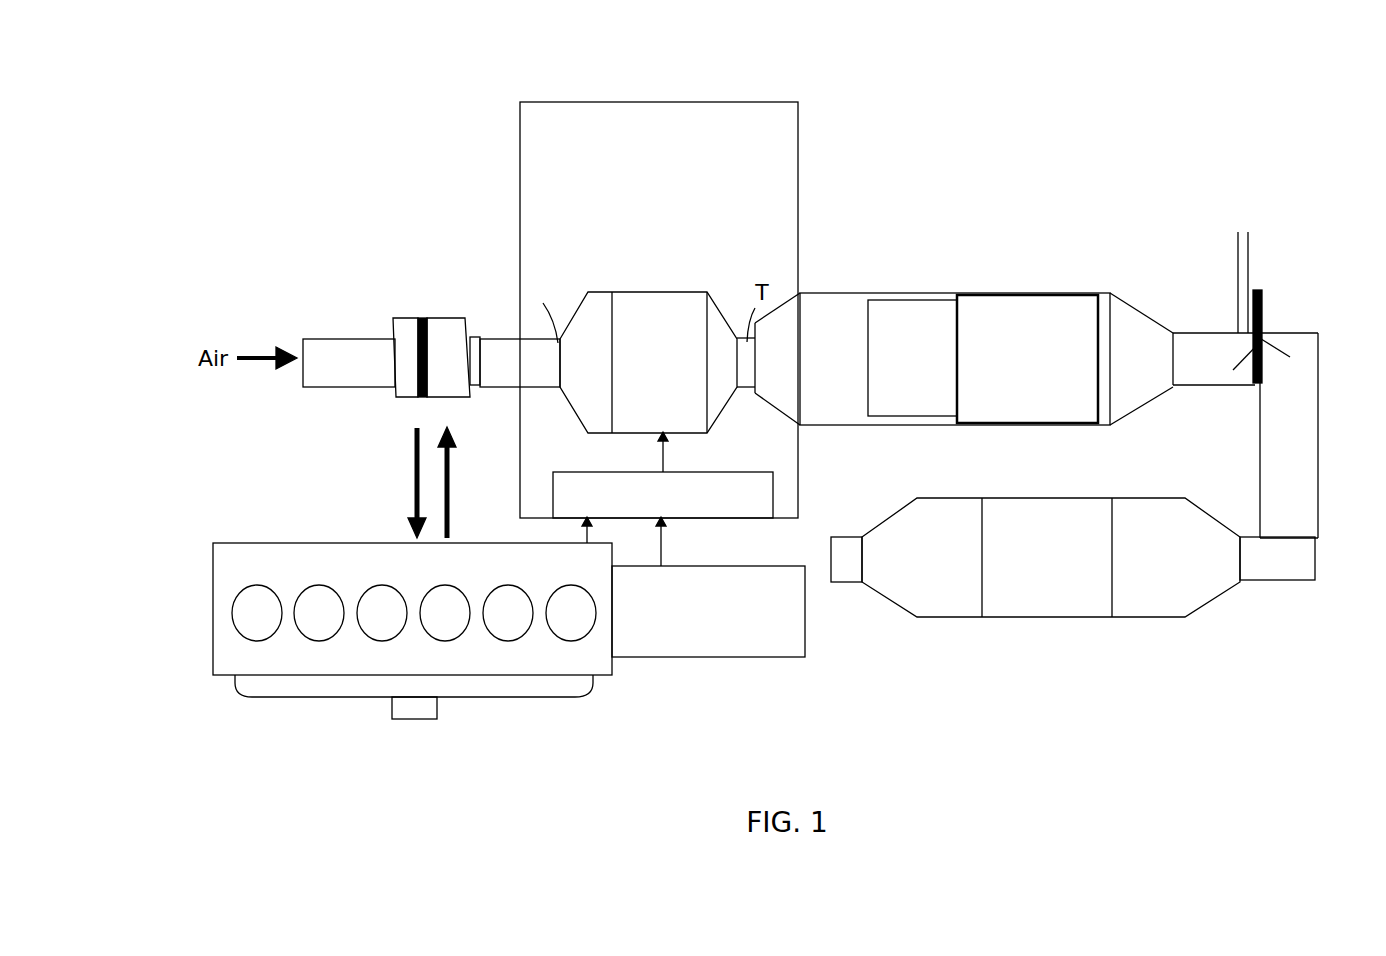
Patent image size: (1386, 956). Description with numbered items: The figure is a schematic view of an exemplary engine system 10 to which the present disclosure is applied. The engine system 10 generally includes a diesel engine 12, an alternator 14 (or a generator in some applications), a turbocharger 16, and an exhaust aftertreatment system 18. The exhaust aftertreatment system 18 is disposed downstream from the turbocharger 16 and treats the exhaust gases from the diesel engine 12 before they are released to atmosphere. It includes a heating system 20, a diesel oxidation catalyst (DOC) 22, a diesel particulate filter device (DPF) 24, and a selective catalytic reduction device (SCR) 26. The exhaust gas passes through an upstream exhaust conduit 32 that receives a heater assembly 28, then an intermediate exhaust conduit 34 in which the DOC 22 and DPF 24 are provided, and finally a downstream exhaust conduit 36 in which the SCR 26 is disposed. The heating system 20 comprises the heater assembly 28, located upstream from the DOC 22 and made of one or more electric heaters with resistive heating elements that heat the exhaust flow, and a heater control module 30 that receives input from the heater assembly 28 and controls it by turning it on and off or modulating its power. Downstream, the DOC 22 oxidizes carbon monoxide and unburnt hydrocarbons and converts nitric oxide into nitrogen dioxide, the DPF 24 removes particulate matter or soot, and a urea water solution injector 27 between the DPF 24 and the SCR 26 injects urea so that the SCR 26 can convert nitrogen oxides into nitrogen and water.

The engine system 10 is at (1192, 75).
The diesel engine 12 is at (213, 587).
The alternator 14 is at (753, 658).
The turbocharger 16 is at (400, 318).
The exhaust aftertreatment system 18 is at (1025, 150).
The heating system 20 is at (665, 102).
The diesel oxidation catalyst 22 is at (890, 305).
The diesel particulate filter device 24 is at (1027, 298).
The selective catalytic reduction device 26 is at (1042, 618).
The urea water solution injector 27 is at (1250, 265).
The heater assembly 28 is at (700, 300).
The heater control module 30 is at (770, 502).
The upstream exhaust conduit 32 is at (583, 297).
The intermediate exhaust conduit 34 is at (817, 290).
The downstream exhaust conduit 36 is at (1142, 618).